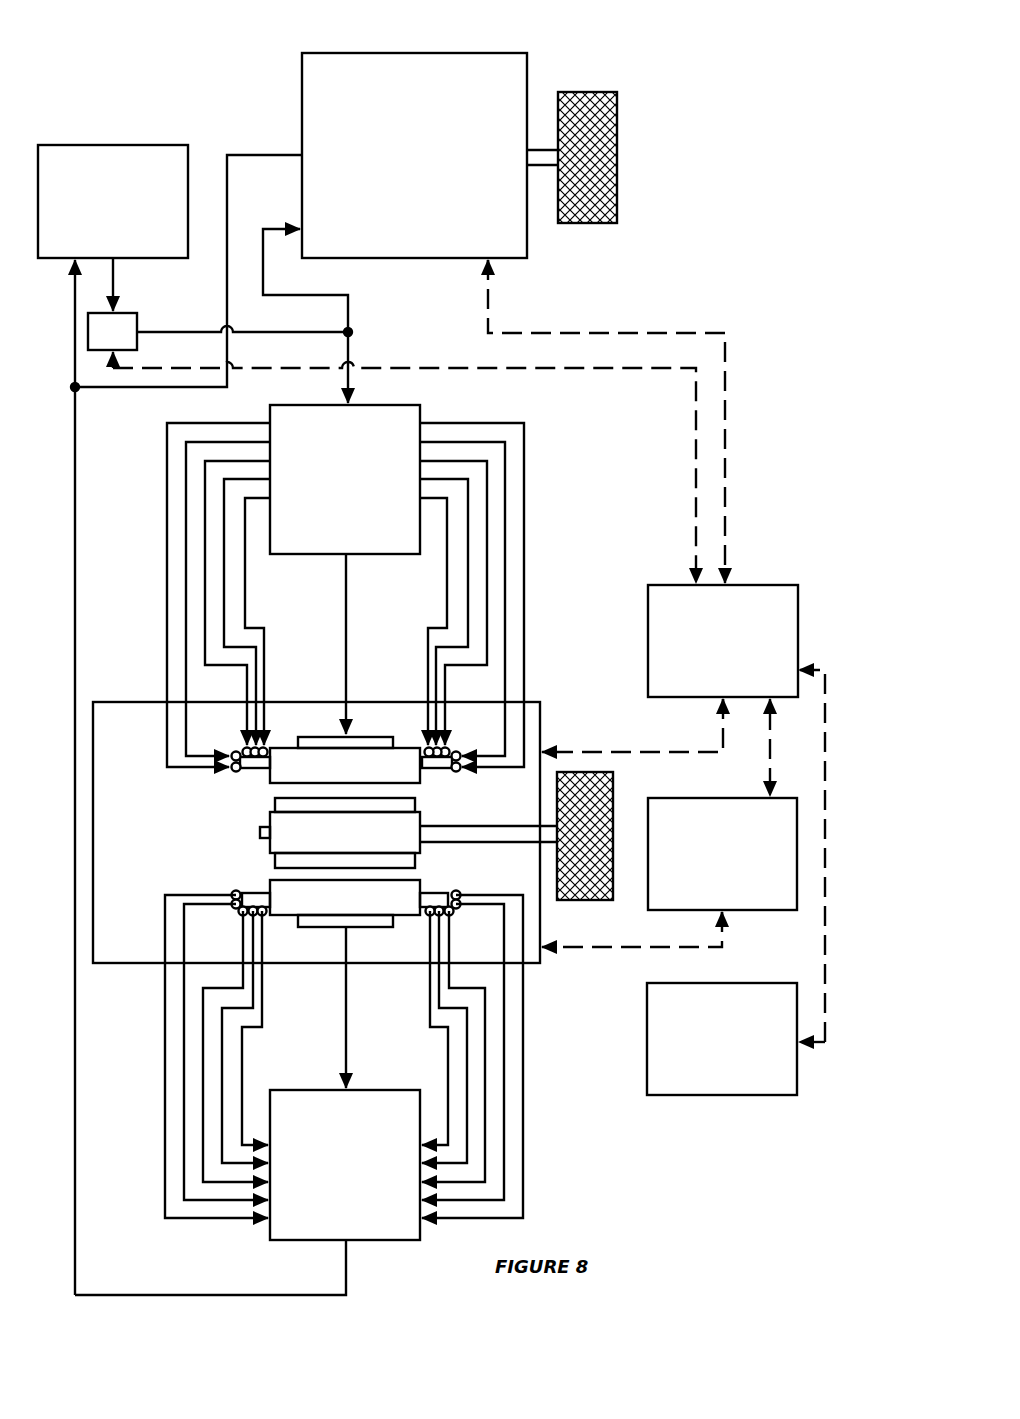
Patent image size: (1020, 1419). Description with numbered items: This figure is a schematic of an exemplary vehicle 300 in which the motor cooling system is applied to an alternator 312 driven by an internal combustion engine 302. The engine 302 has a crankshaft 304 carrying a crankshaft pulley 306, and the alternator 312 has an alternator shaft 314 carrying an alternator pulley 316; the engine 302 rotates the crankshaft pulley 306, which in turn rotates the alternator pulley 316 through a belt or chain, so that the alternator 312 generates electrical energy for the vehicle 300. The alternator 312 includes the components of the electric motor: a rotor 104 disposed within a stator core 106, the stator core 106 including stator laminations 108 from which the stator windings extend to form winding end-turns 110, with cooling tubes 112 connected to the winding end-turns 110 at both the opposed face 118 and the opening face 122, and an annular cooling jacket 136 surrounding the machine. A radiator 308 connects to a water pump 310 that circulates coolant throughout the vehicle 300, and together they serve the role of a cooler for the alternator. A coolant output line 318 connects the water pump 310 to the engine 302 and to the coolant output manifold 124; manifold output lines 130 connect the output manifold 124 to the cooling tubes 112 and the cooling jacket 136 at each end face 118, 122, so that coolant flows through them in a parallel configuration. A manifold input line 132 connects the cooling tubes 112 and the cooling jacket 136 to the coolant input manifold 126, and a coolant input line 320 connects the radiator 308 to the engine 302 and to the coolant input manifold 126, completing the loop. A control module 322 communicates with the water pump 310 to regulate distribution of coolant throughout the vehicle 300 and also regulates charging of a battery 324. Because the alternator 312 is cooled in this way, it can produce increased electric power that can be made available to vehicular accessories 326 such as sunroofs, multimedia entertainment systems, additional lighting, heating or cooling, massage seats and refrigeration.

The vehicle 300 is at (662, 276).
The internal combustion engine 302 is at (414, 155).
The crankshaft 304 is at (541, 148).
The crankshaft pulley 306 is at (585, 91).
The radiator 308 is at (192, 720).
The water pump 310 is at (218, 313).
The alternator 312 is at (128, 698).
The alternator shaft 314 is at (543, 843).
The alternator pulley 316 is at (613, 830).
The coolant output line 318 is at (352, 355).
The coolant input line 320 is at (77, 558).
The control module 322 is at (469, 651).
The battery 324 is at (669, 872).
The vehicular accessories 326 is at (736, 1039).
The coolant output manifold 124 is at (345, 586).
The coolant input manifold 126 is at (344, 1067).
The manifold output lines 130 is at (267, 600).
The manifold input line 132 is at (262, 1047).
The cooling jacket 136 is at (310, 736).
The stator laminations 108 is at (346, 832).
The rotor 104 is at (340, 833).
The stator core 106 is at (258, 797).
The opening face 122 is at (437, 800).
The opposed face 118 is at (256, 855).
The winding end-turns 110 is at (430, 890).
The cooling tubes 112 is at (450, 897).